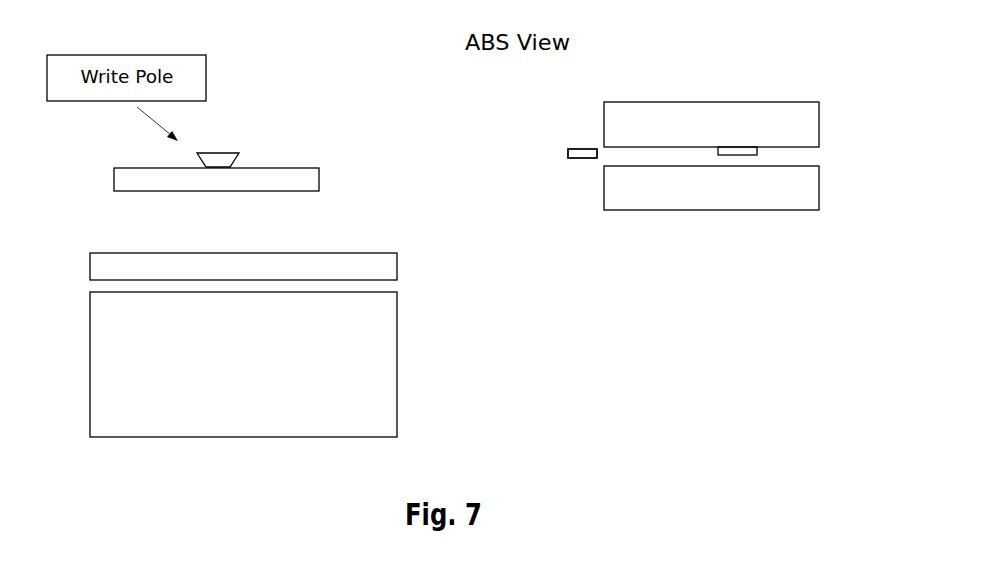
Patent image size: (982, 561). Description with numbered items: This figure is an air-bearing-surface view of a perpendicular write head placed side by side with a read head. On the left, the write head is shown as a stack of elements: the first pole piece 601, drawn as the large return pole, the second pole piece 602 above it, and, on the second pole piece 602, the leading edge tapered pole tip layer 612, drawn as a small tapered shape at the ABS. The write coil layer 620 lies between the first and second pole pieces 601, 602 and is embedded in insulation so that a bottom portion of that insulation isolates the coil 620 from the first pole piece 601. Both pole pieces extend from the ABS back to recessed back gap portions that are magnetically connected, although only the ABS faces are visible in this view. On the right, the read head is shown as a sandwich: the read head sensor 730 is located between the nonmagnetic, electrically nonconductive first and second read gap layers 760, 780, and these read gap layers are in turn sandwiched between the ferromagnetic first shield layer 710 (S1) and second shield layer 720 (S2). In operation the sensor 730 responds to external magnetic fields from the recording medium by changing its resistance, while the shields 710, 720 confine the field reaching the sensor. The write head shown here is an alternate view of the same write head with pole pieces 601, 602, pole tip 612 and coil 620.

The first pole piece 601 is at (145, 437).
The second pole piece 602 is at (255, 167).
The leading edge tapered pole tip layer 612 is at (208, 153).
The write coil layer 620 is at (308, 253).
The first shield layer 710 is at (623, 210).
The second shield layer 720 is at (622, 102).
The read head sensor 730 is at (757, 152).
The first read gap layer 760 is at (568, 154).
The second read gap layer 780 is at (540, 144).